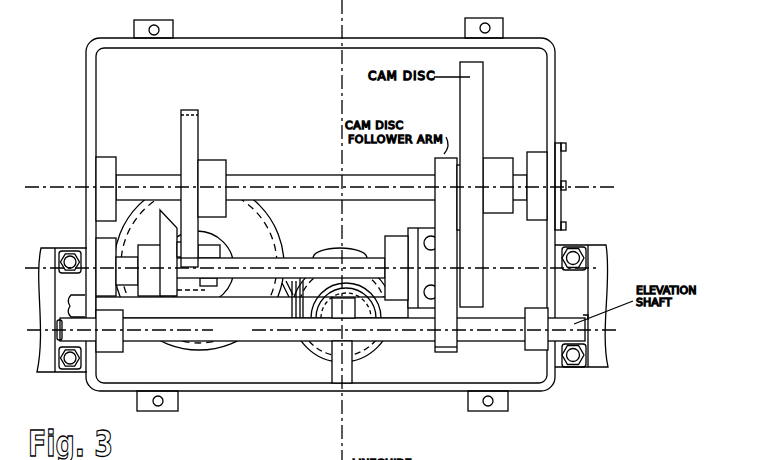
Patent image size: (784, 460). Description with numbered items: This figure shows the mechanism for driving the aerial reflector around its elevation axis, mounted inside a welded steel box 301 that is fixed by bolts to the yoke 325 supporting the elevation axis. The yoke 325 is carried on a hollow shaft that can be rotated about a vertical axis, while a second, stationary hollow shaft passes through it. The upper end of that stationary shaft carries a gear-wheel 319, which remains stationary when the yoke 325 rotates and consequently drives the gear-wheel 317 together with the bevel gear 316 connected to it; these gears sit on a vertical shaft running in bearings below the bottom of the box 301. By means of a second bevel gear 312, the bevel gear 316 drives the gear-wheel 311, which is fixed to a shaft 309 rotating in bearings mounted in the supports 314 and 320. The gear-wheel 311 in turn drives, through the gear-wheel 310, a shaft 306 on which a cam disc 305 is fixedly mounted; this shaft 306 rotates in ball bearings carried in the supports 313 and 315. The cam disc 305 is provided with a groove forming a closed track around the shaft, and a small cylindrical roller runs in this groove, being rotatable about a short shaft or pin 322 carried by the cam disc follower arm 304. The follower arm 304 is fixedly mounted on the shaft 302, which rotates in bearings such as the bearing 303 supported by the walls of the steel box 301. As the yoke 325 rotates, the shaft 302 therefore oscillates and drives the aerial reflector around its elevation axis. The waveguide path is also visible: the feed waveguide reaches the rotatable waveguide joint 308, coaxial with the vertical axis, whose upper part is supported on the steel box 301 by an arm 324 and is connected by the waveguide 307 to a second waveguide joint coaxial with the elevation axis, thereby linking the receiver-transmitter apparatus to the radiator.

The welded steel box 301 is at (327, 389).
The shaft 302 is at (322, 328).
The bearing 303 is at (115, 343).
The cam disc follower arm 304 is at (446, 352).
The cam disc 305 is at (474, 92).
The shaft 306 is at (297, 163).
The waveguide 307 is at (252, 307).
The rotatable waveguide joint 308 is at (352, 290).
The shaft 309 is at (301, 268).
The gear-wheel 310 is at (192, 143).
The gear-wheel 311 is at (226, 257).
The second bevel gear 312 is at (168, 240).
The support 313 is at (103, 173).
The support 314 is at (104, 248).
The support 315 is at (538, 172).
The bevel gear 316 is at (211, 241).
The gear-wheel 317 is at (195, 350).
The gear-wheel 319 is at (336, 316).
The support 320 is at (397, 248).
The shaft or pin 322 is at (456, 175).
The arm 324 is at (352, 373).
The yoke 325 is at (47, 372).